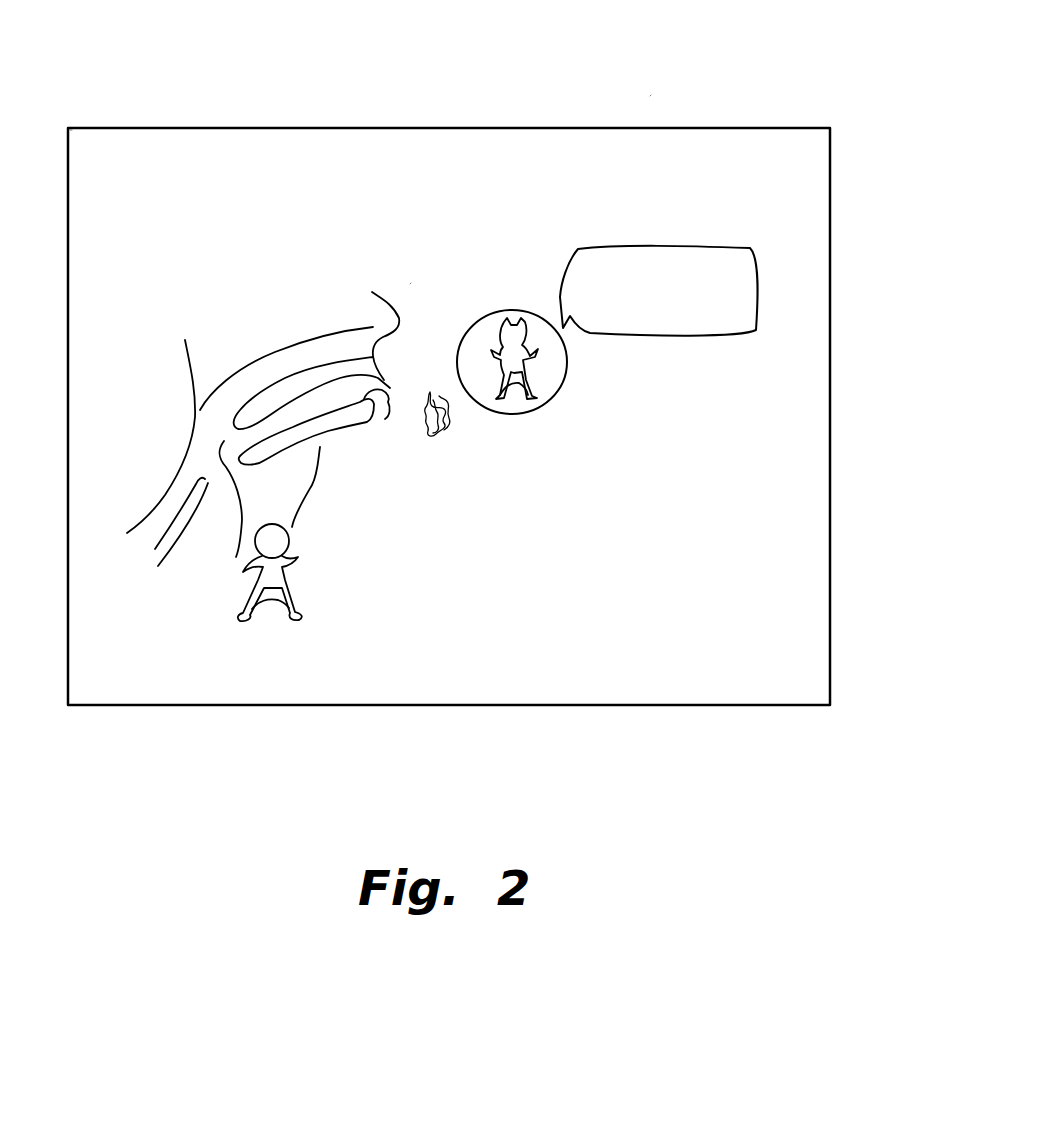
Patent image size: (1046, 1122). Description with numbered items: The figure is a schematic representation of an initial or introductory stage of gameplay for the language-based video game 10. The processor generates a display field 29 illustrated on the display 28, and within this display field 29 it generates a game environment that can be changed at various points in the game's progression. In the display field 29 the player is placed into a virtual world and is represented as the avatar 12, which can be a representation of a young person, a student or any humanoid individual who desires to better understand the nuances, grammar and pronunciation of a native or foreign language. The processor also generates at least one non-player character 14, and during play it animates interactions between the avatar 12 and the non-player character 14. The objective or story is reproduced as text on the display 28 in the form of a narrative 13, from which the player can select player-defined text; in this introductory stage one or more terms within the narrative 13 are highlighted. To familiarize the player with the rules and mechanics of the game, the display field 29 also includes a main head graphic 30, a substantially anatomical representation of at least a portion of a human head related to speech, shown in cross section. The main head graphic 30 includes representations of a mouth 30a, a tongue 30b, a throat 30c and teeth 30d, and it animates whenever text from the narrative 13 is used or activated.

The language-based video game 10 is at (650, 96).
The avatar 12 is at (288, 587).
The narrative 13 is at (701, 248).
The non-player character 14 is at (566, 365).
The display 28 is at (537, 705).
The display field 29 is at (360, 175).
The main head graphic 30 is at (410, 284).
The mouth 30a is at (377, 388).
The tongue 30b is at (300, 433).
The throat 30c is at (213, 437).
The teeth 30d is at (381, 373).